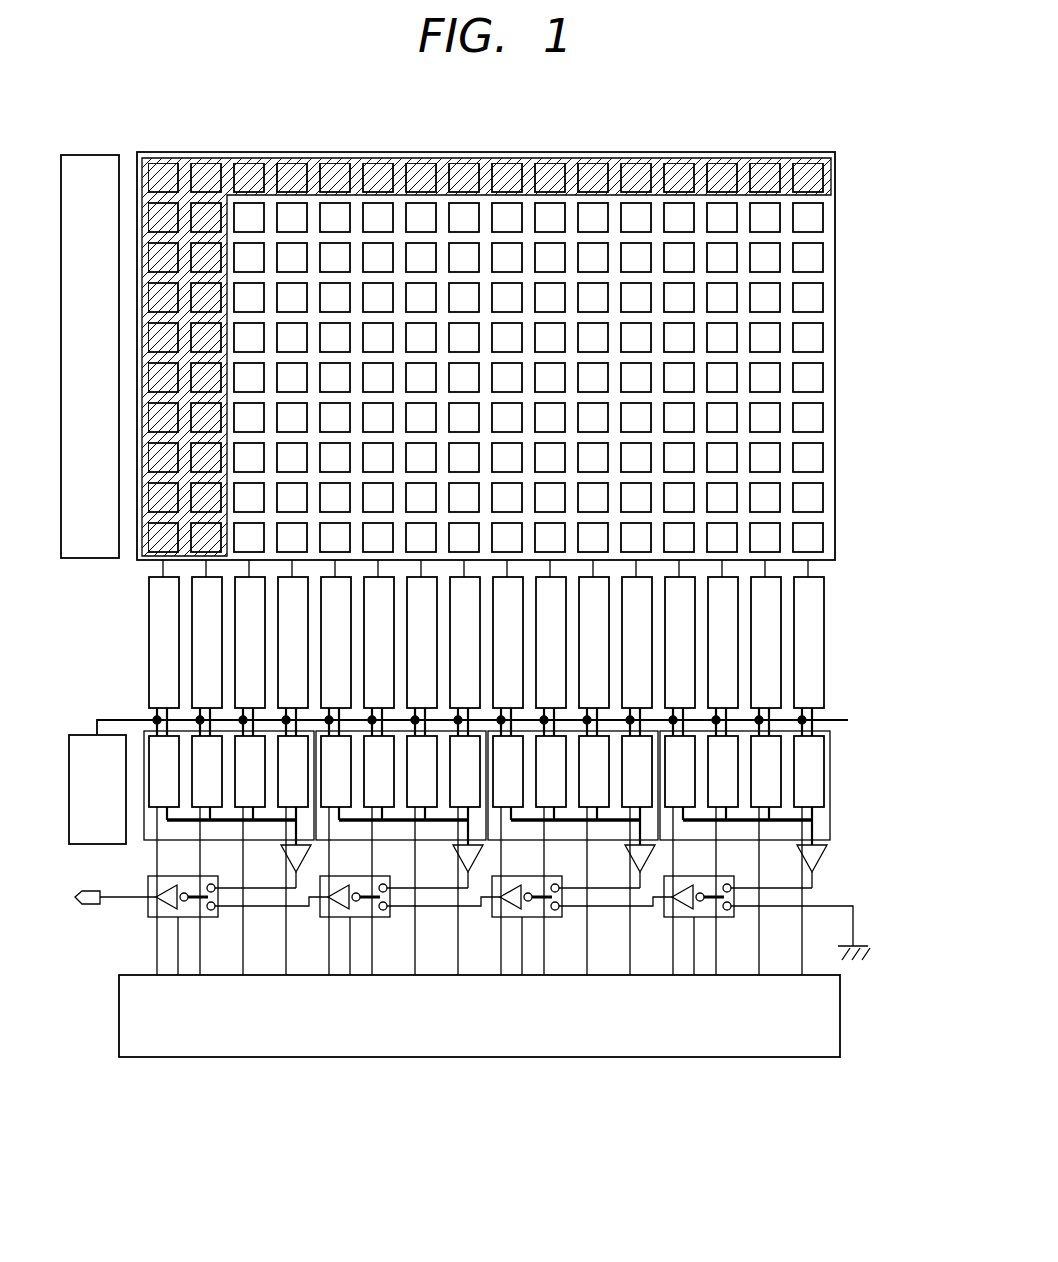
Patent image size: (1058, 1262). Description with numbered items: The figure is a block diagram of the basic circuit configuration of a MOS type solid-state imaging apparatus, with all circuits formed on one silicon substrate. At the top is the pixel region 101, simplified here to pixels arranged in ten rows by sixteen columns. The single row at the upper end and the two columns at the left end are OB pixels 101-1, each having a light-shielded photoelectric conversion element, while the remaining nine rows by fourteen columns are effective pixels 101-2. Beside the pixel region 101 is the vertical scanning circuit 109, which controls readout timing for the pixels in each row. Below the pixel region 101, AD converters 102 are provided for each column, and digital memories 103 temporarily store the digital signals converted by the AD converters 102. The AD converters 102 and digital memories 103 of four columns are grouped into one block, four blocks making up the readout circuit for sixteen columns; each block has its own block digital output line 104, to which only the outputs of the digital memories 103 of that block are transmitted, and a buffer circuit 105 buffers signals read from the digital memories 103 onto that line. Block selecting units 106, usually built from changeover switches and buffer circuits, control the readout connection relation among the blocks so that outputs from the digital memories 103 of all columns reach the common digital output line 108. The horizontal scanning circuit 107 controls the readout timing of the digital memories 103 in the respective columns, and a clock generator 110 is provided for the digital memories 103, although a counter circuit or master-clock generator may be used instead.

The pixel region 101 is at (526, 325).
The OB pixels 101-1 is at (572, 152).
The effective pixels 101-2 is at (810, 352).
The AD converters 102 is at (150, 600).
The digital memories 103 is at (150, 747).
The block digital output lines 104 is at (187, 840).
The buffer circuits 105 is at (306, 862).
The block selecting units 106 is at (170, 919).
The horizontal scanning circuit 107 is at (398, 1057).
The common digital output line 108 is at (92, 905).
The vertical scanning circuit 109 is at (92, 155).
The clock generator 110 is at (88, 735).